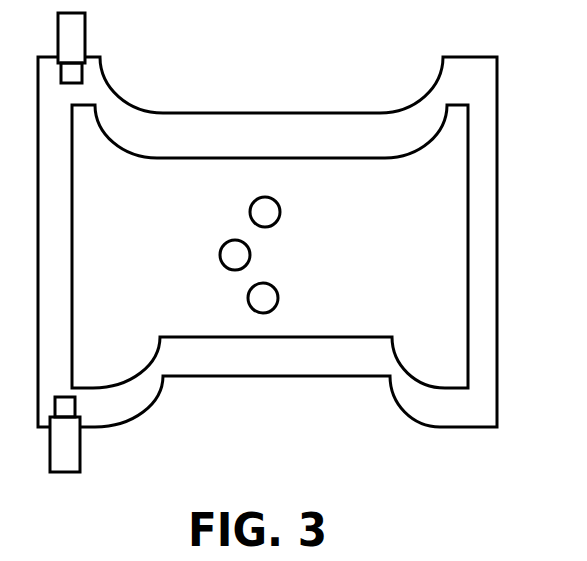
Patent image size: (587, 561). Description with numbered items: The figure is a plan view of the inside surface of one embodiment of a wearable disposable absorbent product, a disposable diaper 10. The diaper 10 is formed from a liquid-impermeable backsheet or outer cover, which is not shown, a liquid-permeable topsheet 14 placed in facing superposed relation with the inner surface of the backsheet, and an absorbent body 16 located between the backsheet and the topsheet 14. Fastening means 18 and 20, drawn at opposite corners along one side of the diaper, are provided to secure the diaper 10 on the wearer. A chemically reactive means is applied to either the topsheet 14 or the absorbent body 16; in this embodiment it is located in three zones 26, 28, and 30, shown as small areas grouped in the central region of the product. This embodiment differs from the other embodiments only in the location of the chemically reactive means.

The diaper 10 is at (267, 269).
The topsheet 14 is at (398, 371).
The absorbent body 16 is at (193, 318).
The fastening means 18 is at (80, 453).
The fastening means 20 is at (85, 22).
The zone 26 is at (262, 197).
The zone 28 is at (224, 244).
The zone 30 is at (277, 292).